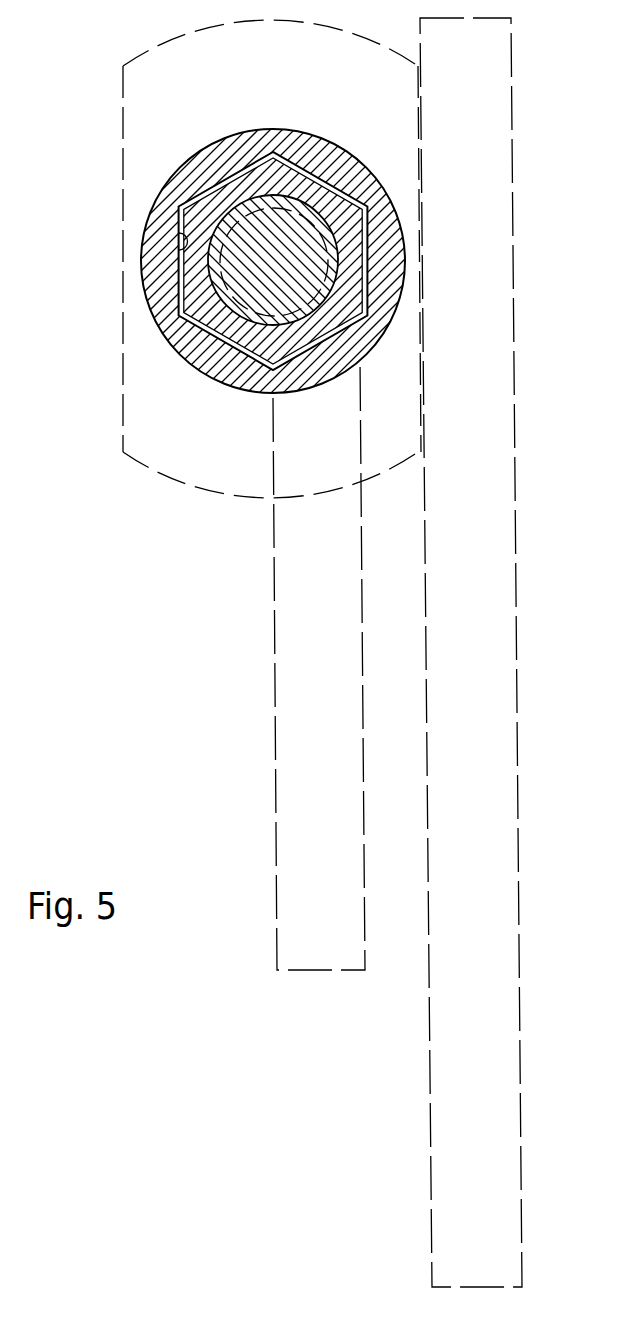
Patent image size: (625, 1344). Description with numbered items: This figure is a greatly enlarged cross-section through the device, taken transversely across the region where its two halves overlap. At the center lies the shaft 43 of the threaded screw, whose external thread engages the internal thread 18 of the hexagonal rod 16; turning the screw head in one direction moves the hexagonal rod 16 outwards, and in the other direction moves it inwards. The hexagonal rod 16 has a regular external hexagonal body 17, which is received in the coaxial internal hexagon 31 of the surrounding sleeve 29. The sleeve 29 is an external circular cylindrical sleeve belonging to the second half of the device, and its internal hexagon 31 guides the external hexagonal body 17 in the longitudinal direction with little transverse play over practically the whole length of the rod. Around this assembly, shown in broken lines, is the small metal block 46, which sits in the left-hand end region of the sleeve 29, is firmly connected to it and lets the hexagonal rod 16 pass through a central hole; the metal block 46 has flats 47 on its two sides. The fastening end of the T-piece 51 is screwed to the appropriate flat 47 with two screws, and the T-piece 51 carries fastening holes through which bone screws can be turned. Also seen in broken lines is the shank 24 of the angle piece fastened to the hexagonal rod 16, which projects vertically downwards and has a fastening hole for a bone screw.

The hexagonal rod 16 is at (230, 222).
The external hexagonal body 17 is at (179, 268).
The internal thread 18 is at (247, 178).
The shank 24 is at (315, 698).
The sleeve 29 is at (327, 140).
The internal hexagon 31 is at (187, 233).
The shaft 43 is at (260, 290).
The metal block 46 is at (148, 393).
The flats 47 is at (123, 118).
The T-piece 51 is at (475, 710).